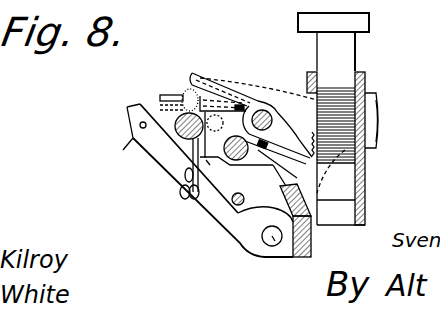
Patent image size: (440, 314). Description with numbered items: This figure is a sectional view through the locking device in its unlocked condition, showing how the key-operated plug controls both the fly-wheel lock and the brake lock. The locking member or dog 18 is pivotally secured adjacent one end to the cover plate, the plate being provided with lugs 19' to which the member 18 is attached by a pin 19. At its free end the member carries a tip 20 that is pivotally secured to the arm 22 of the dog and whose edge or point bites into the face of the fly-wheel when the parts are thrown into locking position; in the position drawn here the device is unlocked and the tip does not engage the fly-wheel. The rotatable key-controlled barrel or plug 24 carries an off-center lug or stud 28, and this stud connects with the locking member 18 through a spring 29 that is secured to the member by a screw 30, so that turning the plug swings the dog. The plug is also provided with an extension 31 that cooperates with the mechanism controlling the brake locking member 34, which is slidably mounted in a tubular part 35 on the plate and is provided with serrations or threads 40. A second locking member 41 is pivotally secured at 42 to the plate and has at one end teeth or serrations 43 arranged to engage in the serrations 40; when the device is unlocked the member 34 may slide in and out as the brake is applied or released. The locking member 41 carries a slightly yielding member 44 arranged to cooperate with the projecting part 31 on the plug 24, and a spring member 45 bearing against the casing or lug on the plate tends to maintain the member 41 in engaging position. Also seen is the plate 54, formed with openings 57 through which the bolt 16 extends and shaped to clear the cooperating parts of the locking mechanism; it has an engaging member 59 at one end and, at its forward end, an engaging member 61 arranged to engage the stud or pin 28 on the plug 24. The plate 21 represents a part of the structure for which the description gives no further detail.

The bolt 16 is at (238, 162).
The locking member or dog 18 is at (200, 206).
The pin 19 is at (263, 250).
The lugs 19' is at (293, 230).
The tip 20 is at (136, 140).
The plate 21 is at (135, 103).
The arm 22 is at (140, 125).
The rotatable key-controlled barrel or plug 24 is at (186, 160).
The lug or stud 28 is at (185, 92).
The spring 29 is at (186, 178).
The screw 30 is at (181, 194).
The extension 31 is at (198, 76).
The brake locking member 34 is at (357, 60).
The tubular part 35 is at (366, 172).
The serrations or threads 40 is at (371, 100).
The locking member 41 is at (277, 115).
The pivot 42 is at (260, 110).
The teeth or serrations 43 is at (258, 117).
The slightly yielding member 44 is at (163, 95).
The spring member 45 is at (250, 197).
The plate 54 is at (378, 130).
The openings 57 is at (262, 160).
The engaging member 59 is at (286, 186).
The engaging member 61 is at (216, 170).